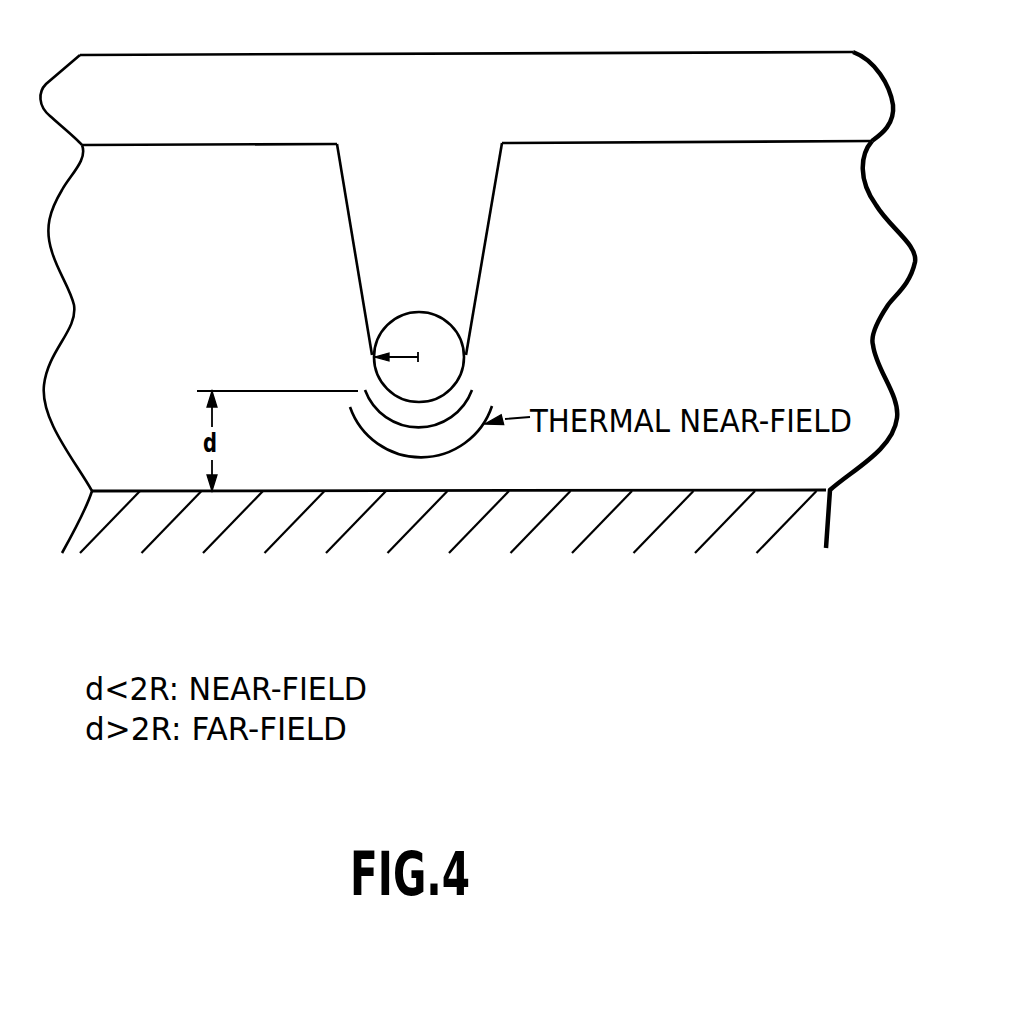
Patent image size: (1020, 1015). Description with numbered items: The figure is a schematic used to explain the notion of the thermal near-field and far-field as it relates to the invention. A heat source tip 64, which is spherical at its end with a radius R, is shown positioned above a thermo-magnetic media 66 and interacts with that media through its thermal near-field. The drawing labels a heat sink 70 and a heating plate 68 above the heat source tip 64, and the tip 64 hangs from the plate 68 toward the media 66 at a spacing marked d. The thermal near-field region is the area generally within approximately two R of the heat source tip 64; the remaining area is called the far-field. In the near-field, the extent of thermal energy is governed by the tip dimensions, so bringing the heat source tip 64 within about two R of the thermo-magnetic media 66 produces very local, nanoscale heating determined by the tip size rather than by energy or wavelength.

The heat sink 70 is at (466, 73).
The heating plate 68 is at (480, 316).
The heat source tip 64 is at (470, 397).
The thermo-magnetic media 66 is at (436, 562).